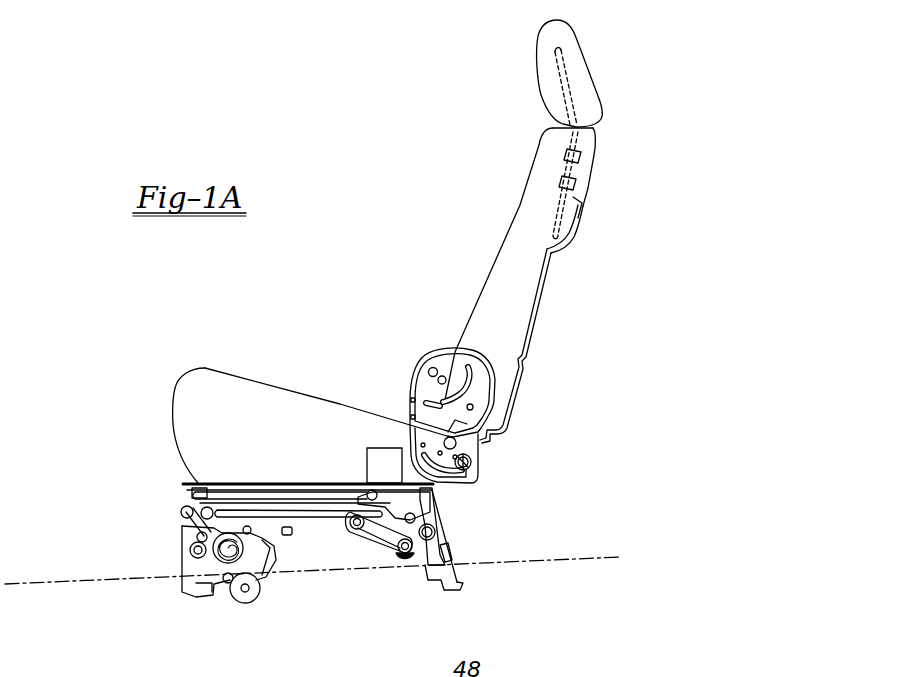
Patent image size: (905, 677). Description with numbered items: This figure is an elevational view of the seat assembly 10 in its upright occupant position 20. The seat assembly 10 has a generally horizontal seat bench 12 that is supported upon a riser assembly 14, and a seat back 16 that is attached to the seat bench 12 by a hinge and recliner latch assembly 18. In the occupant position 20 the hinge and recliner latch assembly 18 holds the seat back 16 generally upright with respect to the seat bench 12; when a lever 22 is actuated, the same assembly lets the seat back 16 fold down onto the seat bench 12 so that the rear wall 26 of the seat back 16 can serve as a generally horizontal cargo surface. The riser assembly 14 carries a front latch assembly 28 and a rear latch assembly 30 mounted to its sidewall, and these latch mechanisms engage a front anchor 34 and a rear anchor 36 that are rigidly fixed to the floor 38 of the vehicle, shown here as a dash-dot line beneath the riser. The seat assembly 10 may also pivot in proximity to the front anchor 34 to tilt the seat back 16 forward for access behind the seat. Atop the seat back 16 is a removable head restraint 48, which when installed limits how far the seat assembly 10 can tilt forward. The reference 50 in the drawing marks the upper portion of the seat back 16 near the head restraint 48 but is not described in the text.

The seat assembly 10 is at (348, 153).
The seat bench 12 is at (308, 398).
The riser assembly 14 is at (348, 571).
The seat back 16 is at (515, 292).
The hinge and recliner latch assembly 18 is at (493, 392).
The occupant position 20 is at (526, 276).
The lever 22 is at (472, 460).
The rear wall 26 is at (550, 263).
The front latch assembly 28 is at (279, 580).
The rear latch assembly 30 is at (478, 590).
The front anchor 34 is at (200, 596).
The rear anchor 36 is at (440, 588).
The floor 38 is at (97, 581).
The removable head restraint 48 is at (587, 72).
The seat back cushion 50 is at (518, 228).